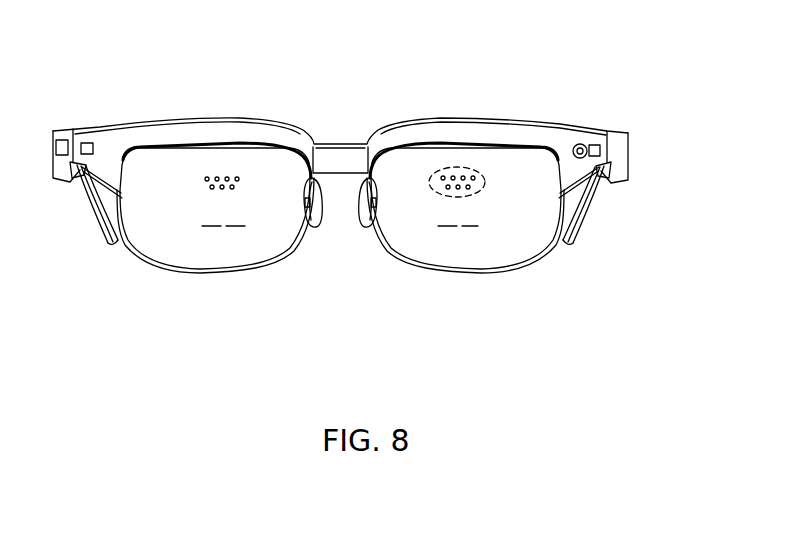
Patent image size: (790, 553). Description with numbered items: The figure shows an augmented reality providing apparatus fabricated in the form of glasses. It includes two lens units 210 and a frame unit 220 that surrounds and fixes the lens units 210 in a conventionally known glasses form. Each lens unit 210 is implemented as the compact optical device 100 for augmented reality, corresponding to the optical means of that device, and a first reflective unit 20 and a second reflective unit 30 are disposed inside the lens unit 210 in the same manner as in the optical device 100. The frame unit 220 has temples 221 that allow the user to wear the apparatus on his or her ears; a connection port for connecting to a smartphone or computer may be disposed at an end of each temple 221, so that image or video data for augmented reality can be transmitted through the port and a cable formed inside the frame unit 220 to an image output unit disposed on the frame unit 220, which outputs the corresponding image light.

The frame unit 220 is at (403, 124).
The temple 221 is at (588, 221).
The lens unit 210 is at (545, 250).
The optical device for augmented reality 100 is at (413, 233).
The first reflective unit 20 is at (457, 228).
The second reflective unit 30 is at (463, 167).